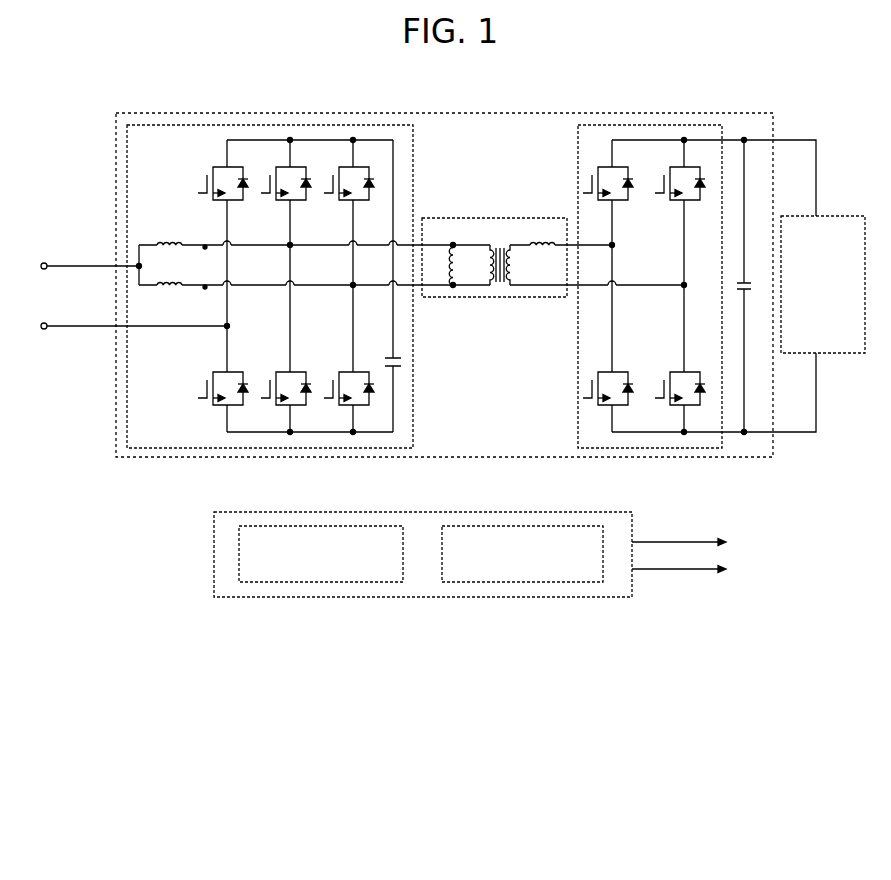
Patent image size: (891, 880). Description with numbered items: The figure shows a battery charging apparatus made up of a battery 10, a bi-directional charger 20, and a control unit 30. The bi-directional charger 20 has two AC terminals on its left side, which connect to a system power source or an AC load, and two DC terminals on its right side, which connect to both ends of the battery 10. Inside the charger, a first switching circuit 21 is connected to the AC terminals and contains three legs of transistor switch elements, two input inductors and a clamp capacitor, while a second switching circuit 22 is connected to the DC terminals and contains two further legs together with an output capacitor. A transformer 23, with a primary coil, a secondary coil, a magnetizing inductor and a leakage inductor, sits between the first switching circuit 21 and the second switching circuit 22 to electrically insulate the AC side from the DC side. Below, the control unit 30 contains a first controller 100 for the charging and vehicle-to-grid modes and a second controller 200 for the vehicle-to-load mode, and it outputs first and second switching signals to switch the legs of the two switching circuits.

The battery 10 is at (840, 215).
The bi-directional charger 20 is at (775, 122).
The first switching circuit 21 is at (389, 123).
The second switching circuit 22 is at (705, 123).
The transformer 23 is at (525, 218).
The control unit 30 is at (638, 519).
The first controller 100 is at (378, 526).
The second controller 200 is at (572, 526).